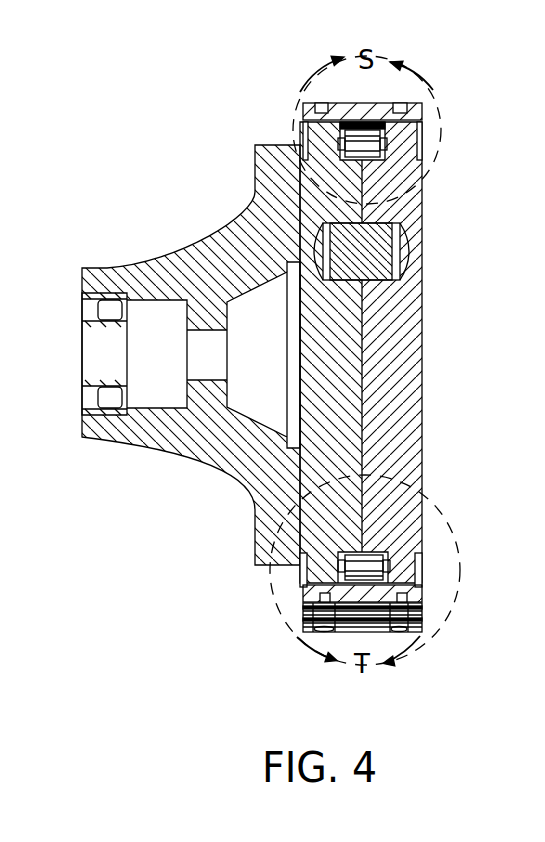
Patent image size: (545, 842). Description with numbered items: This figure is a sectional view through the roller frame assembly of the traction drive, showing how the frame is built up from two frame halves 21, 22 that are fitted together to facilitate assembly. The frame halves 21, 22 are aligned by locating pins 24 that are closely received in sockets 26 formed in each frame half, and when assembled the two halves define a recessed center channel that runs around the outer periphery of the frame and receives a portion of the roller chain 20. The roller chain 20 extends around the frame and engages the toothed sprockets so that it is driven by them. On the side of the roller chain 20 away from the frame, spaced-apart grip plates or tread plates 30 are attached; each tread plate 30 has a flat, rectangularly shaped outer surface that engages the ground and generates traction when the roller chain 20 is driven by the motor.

The roller chain 20 is at (408, 633).
The frame half 21 is at (303, 190).
The frame half 22 is at (423, 302).
The locating pin 24 is at (397, 240).
The socket 26 is at (397, 262).
The tread plate 30 is at (378, 103).